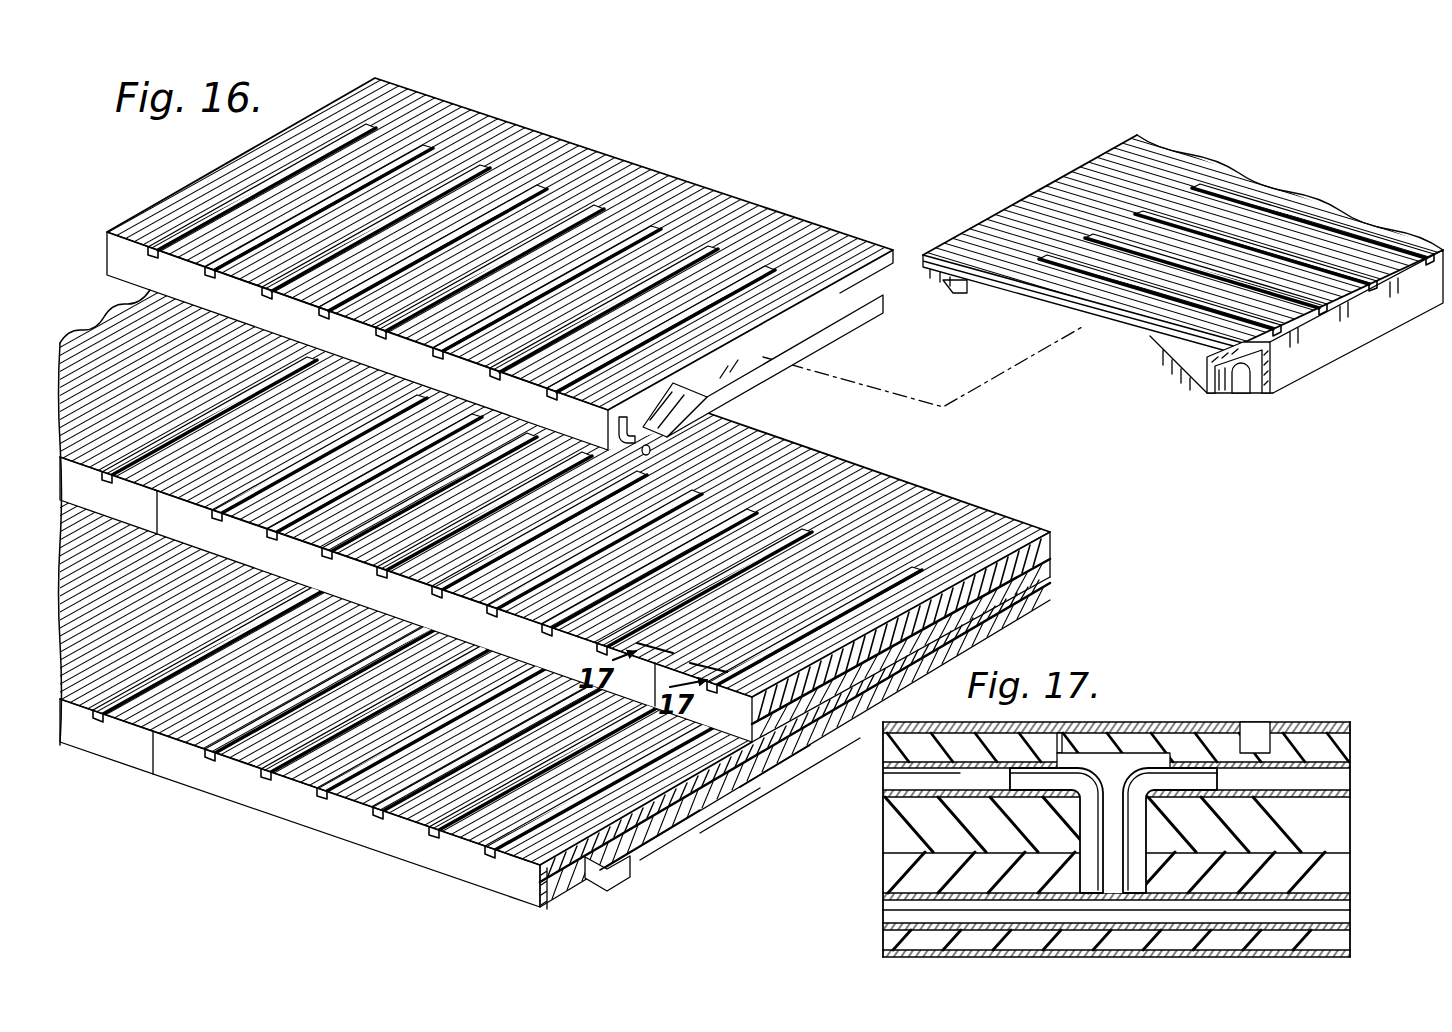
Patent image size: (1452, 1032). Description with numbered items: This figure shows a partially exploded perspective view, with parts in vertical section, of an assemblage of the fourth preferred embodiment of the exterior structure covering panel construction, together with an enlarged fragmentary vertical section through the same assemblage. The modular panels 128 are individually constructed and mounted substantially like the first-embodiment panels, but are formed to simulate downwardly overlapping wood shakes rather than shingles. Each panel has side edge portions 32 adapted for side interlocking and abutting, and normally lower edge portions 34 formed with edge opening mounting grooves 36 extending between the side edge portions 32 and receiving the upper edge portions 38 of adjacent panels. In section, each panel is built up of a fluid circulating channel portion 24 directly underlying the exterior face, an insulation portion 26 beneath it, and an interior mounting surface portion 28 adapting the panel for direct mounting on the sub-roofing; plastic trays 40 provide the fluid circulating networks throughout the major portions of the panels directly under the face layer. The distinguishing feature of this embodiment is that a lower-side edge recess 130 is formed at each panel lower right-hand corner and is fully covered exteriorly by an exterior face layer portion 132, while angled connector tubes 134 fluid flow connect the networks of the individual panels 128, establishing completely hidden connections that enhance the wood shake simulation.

In FIG. 16, the modular panels 128 is at (655, 160).
In FIG. 17, the modular panels 128 is at (1110, 807).
In FIG. 16, the side edge portions 32 is at (178, 207).
In FIG. 17, the side edge portions 32 is at (1065, 742).
In FIG. 16, the exterior face layer portion 132 is at (862, 250).
In FIG. 17, the exterior face layer portion 132 is at (960, 722).
In FIG. 16, the angled connector tubes 134 is at (645, 428).
In FIG. 17, the angled connector tubes 134 is at (1255, 862).
In FIG. 16, the lower-side edge recess 130 is at (1222, 387).
In FIG. 17, the lower-side edge recess 130 is at (1160, 760).
In FIG. 16, the upper edge portions 38 is at (1050, 548).
In FIG. 16, the lower edge portions 34 is at (395, 850).
In FIG. 16, the interior mounting surface portion 28 is at (767, 770).
In FIG. 16, the insulation portion 26 is at (730, 803).
In FIG. 17, the insulation portion 26 is at (1335, 823).
In FIG. 16, the fluid circulating channel portion 24 is at (697, 823).
In FIG. 16, the plastic trays 40 is at (652, 828).
In FIG. 16, the edge opening mounting grooves 36 is at (627, 887).